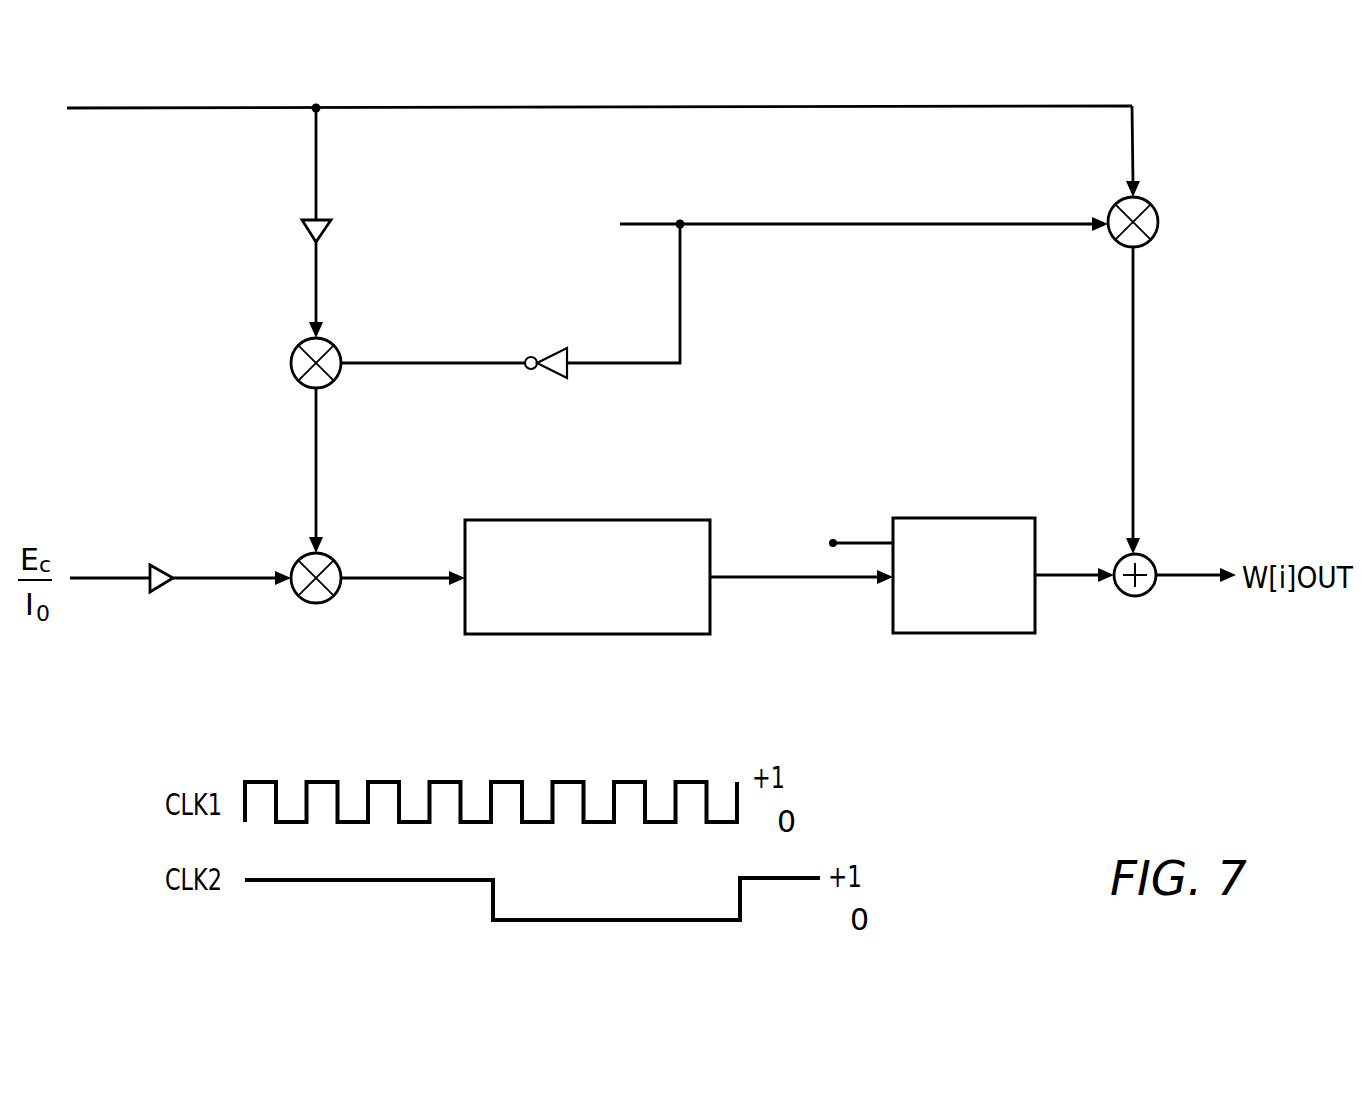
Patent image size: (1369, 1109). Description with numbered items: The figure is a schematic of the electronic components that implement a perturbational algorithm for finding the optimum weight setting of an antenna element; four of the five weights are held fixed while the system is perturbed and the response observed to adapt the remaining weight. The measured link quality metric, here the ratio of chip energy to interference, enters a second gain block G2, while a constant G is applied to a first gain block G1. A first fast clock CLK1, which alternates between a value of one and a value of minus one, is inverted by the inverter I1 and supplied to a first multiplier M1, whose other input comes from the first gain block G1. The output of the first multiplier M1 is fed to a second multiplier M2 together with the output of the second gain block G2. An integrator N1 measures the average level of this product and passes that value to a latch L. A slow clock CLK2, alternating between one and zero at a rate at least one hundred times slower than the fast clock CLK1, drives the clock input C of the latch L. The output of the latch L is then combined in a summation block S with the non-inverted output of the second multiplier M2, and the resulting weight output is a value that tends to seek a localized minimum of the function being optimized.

The constant G is at (586, 110).
The first gain block G1 is at (301, 232).
The first multiplier M1 is at (334, 345).
The inverter I1 is at (553, 350).
The first fast clock CLK1 is at (827, 224).
The second multiplier M2 is at (1158, 215).
The summation block S is at (1152, 560).
The latch L is at (964, 556).
The slow clock CLK2 is at (825, 542).
The integrator N1 is at (587, 557).
The second gain block G2 is at (162, 570).